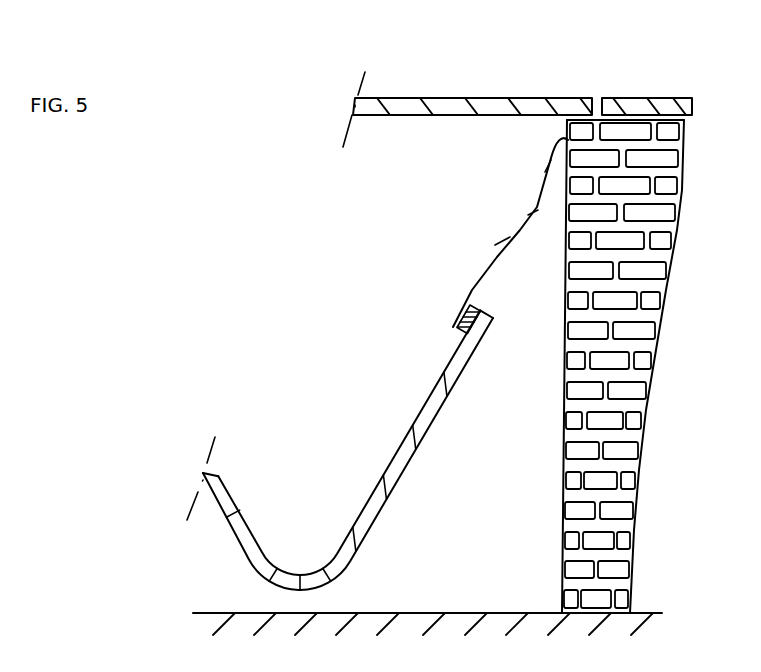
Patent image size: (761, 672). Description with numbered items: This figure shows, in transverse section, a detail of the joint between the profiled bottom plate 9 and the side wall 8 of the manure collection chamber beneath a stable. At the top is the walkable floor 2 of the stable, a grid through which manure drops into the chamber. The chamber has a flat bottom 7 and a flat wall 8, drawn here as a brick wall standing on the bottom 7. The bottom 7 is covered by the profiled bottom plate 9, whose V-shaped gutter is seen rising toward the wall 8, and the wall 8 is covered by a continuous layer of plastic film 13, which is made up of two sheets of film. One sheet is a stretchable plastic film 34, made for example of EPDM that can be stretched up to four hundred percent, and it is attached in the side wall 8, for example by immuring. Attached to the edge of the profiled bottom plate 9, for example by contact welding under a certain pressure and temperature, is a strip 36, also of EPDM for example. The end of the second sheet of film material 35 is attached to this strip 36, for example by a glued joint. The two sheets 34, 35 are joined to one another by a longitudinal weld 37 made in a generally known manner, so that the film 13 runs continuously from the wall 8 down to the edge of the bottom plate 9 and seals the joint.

The floor 2 is at (403, 97).
The film 13 is at (543, 173).
The stretchable plastic film 34 is at (545, 172).
The longitudinal weld 37 is at (527, 213).
The sheet of film material 35 is at (500, 255).
The strip 36 is at (462, 318).
The profiled bottom plate 9 is at (218, 490).
The wall 8 is at (562, 453).
The bottom 7 is at (448, 613).